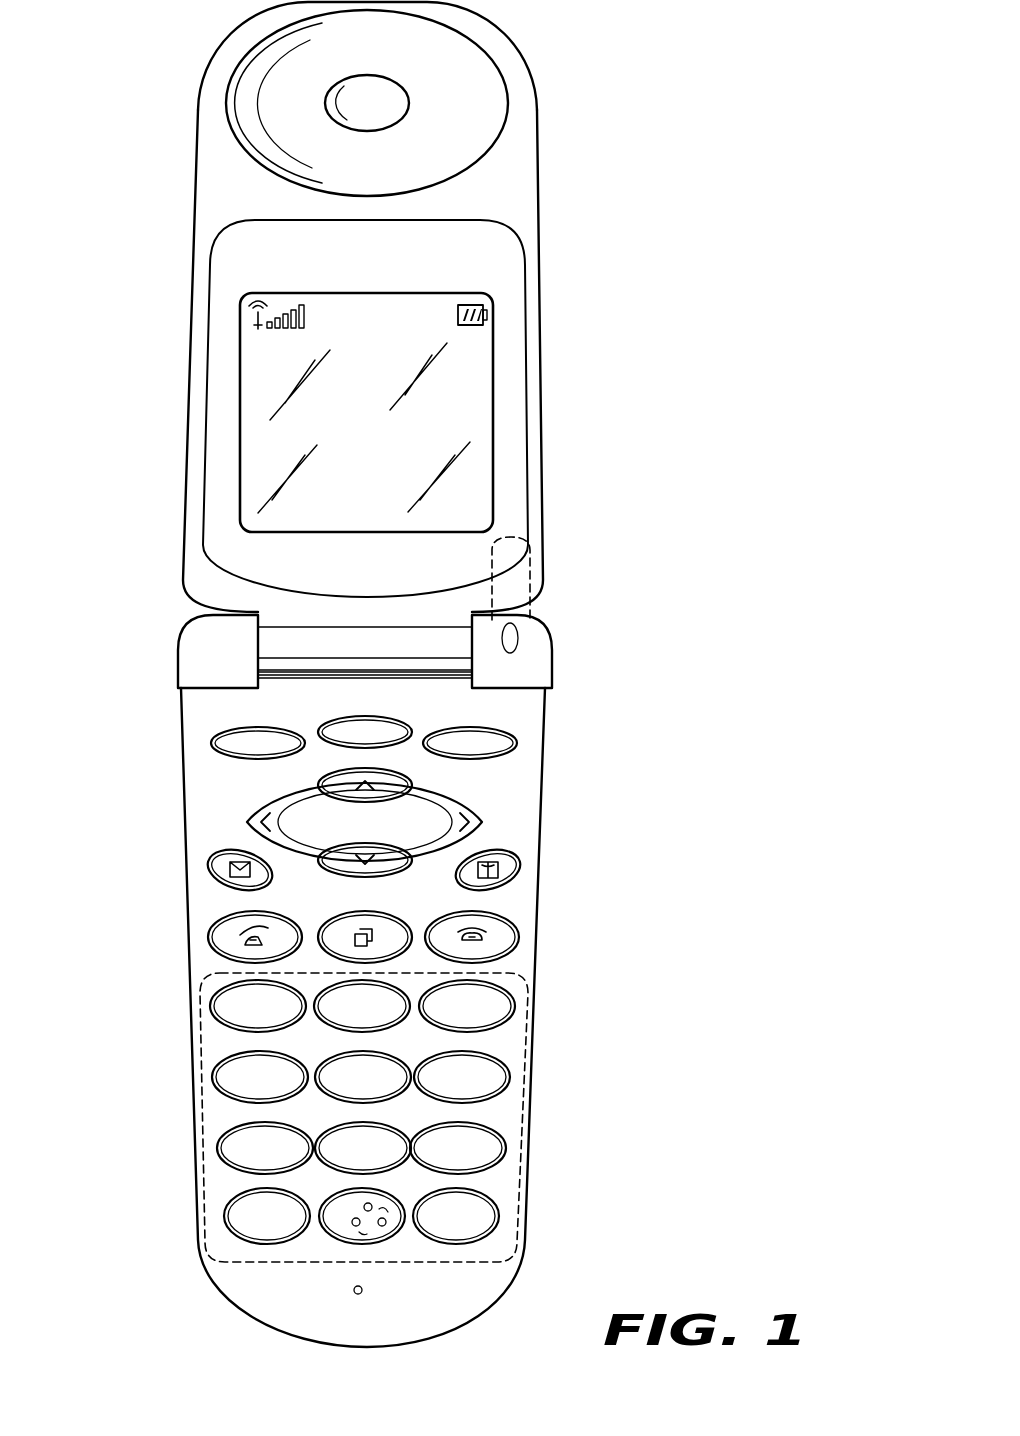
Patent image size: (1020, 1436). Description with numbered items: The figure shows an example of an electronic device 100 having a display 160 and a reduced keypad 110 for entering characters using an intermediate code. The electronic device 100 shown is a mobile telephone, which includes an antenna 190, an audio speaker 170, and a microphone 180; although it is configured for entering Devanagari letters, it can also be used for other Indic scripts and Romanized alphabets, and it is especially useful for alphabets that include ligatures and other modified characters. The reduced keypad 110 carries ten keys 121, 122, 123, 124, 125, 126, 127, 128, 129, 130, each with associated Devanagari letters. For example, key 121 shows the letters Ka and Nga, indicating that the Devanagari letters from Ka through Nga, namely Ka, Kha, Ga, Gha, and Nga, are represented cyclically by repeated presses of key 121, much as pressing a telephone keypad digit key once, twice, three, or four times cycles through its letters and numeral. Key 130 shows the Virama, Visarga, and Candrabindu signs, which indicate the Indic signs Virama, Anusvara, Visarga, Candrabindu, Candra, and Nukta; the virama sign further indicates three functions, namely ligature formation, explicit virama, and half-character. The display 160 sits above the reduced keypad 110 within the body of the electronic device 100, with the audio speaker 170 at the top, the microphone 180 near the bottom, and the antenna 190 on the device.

The electronic device 100 is at (108, 1230).
The reduced keypad 110 is at (528, 1224).
The key 121 is at (213, 1004).
The key 122 is at (392, 1025).
The key 123 is at (513, 996).
The key 124 is at (215, 1074).
The key 125 is at (390, 1092).
The key 126 is at (503, 1067).
The key 127 is at (218, 1144).
The key 128 is at (383, 1162).
The key 129 is at (503, 1146).
The key 130 is at (338, 1235).
The display 160 is at (482, 403).
The audio speaker 170 is at (488, 101).
The microphone 180 is at (360, 1294).
The antenna 190 is at (532, 576).